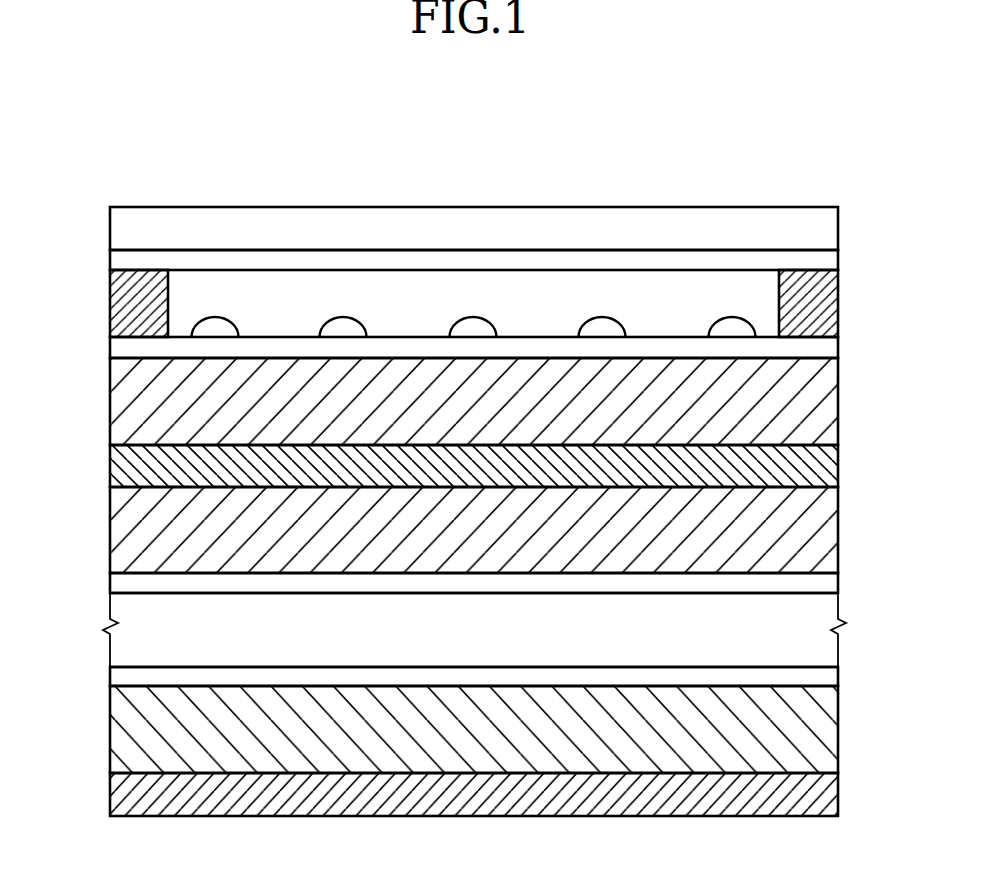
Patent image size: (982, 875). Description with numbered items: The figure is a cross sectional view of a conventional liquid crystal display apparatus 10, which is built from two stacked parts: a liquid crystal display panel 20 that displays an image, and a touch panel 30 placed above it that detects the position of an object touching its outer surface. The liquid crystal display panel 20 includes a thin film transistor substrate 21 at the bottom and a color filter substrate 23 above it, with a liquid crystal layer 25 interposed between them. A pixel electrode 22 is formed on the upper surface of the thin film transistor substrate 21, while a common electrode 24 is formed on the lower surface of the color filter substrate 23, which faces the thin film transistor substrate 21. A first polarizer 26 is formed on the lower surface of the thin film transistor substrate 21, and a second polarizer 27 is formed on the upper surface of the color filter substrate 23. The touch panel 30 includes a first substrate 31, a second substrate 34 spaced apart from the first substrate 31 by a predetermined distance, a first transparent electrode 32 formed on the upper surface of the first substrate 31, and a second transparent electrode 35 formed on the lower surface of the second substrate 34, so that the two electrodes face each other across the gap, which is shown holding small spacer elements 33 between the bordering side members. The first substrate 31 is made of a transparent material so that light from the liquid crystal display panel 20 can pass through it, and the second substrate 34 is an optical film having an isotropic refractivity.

The liquid crystal display device 10 is at (512, 135).
The liquid crystal display panel 20 is at (90, 447).
The thin film transistor substrate 21 is at (833, 740).
The pixel electrode 22 is at (833, 675).
The color filter substrate 23 is at (833, 532).
The common electrode 24 is at (833, 580).
The liquid crystal layer 25 is at (833, 652).
The first polarizer 26 is at (833, 790).
The second polarizer 27 is at (833, 466).
The touch panel 30 is at (90, 208).
The first substrate 31 is at (833, 403).
The first transparent electrode 32 is at (836, 348).
The spacers / sealant 33 is at (733, 325).
The second substrate 34 is at (835, 222).
The second transparent electrode 35 is at (835, 262).